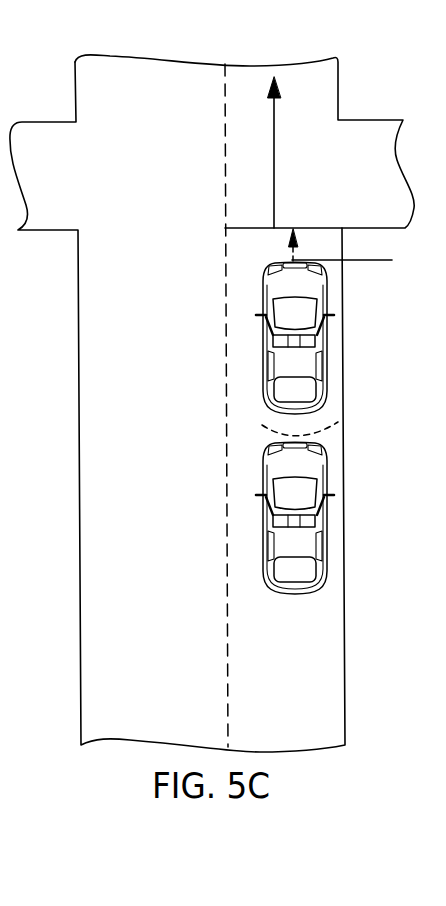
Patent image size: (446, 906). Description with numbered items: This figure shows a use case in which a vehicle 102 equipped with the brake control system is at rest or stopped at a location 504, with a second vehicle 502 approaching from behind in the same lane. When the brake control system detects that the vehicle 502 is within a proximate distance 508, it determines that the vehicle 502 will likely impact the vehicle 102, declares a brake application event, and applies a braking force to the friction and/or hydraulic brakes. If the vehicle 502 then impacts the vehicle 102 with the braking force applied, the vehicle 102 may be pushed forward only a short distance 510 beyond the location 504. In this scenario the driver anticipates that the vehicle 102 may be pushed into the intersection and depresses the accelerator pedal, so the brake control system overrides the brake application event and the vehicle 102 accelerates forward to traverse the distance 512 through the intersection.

The vehicle 102 is at (327, 340).
The vehicle 502 is at (263, 518).
The location 504 is at (367, 262).
The proximate distance 508 is at (322, 437).
The distance 510 is at (298, 240).
The distance 512 is at (275, 152).